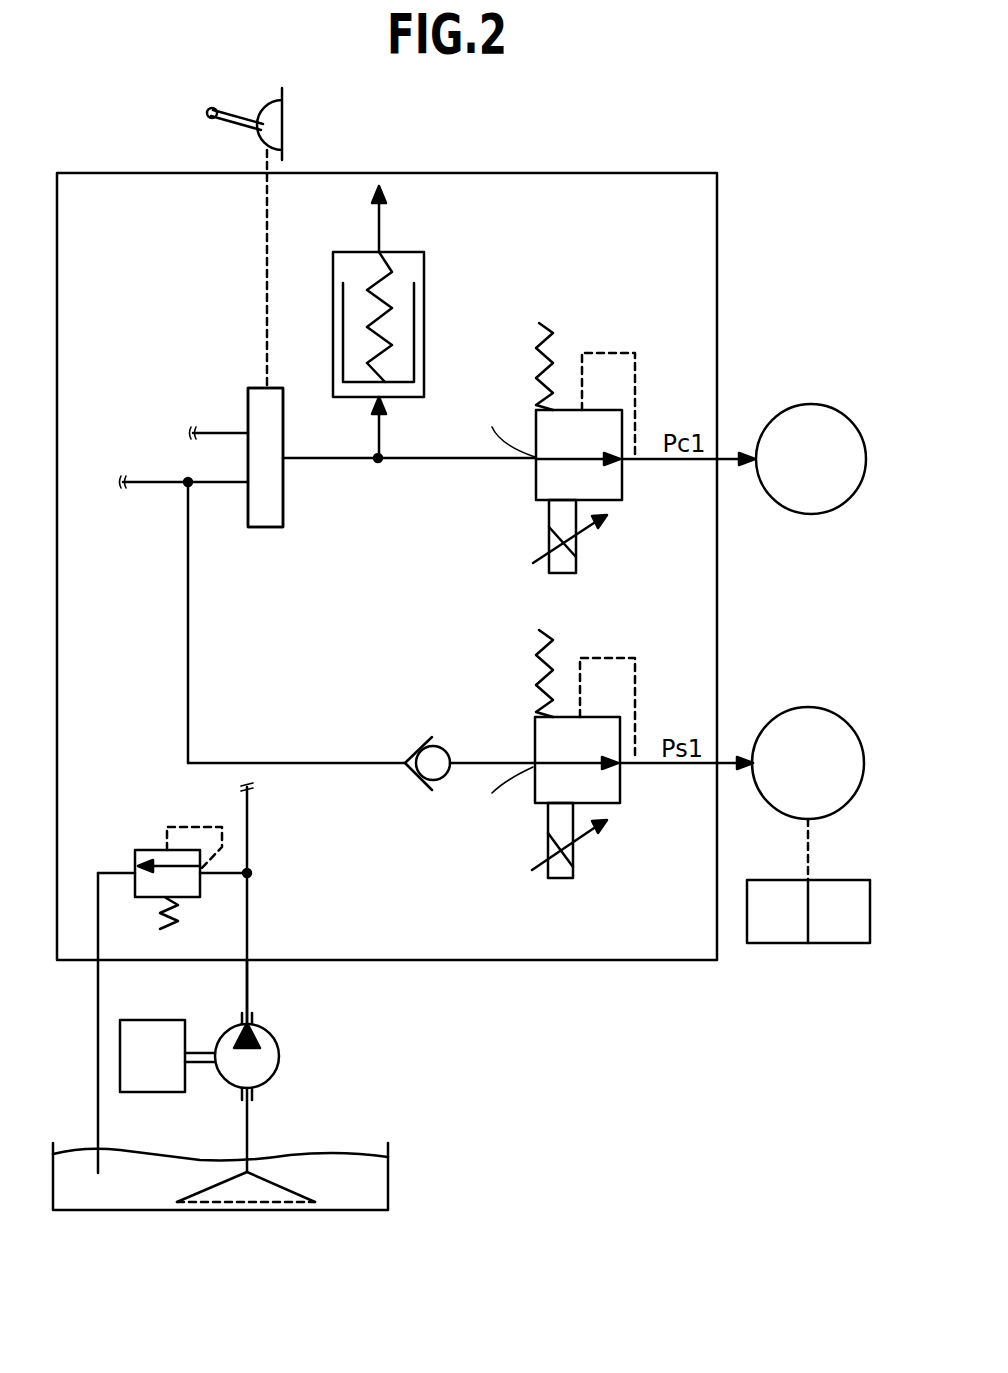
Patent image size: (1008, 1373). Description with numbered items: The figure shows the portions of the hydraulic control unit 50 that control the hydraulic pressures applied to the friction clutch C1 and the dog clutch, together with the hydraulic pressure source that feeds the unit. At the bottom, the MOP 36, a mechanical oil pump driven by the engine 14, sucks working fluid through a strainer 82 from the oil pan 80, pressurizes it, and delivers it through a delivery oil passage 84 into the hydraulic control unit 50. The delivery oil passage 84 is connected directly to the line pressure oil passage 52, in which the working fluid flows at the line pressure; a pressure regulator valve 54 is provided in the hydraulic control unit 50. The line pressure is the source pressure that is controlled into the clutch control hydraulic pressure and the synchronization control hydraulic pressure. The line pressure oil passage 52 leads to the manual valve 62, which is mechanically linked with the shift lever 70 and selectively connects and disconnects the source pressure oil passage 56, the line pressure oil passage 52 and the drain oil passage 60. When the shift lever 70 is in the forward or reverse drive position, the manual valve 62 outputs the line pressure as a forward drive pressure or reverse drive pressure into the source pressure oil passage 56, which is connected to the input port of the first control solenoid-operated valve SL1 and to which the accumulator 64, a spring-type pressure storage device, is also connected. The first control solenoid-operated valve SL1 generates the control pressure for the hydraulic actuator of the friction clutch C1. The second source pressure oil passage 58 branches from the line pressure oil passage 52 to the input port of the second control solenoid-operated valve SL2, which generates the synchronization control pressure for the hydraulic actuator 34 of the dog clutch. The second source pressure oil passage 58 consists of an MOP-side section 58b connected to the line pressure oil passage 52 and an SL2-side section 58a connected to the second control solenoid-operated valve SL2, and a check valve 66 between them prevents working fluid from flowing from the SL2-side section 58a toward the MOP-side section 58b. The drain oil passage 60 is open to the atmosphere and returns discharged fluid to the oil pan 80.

The engine 14 is at (145, 1080).
The hydraulic actuator 34 is at (813, 722).
The MOP 36 is at (262, 1070).
The hydraulic control unit 50 is at (453, 187).
The line pressure oil passage 52 is at (150, 477).
The pressure regulator valve 54 is at (148, 855).
The C1 source pressure oil passage 56 is at (438, 460).
The D1 source pressure oil passage 58 is at (361, 622).
The SL2-side section 58a is at (492, 735).
The MOP-side section 58b is at (353, 760).
The drain oil passage 60 is at (222, 430).
The manual valve 62 is at (263, 515).
The accumulator 64 is at (413, 272).
The check valve 66 is at (438, 773).
The shift lever 70 is at (218, 110).
The oil pan 80 is at (328, 1202).
The strainer 82 is at (258, 1190).
The delivery oil passage 84 is at (248, 985).
The C1 control solenoid-operated valve SL1 is at (579, 335).
The D1 control solenoid-operated valve SL2 is at (579, 640).
The friction clutch C1 is at (802, 385).